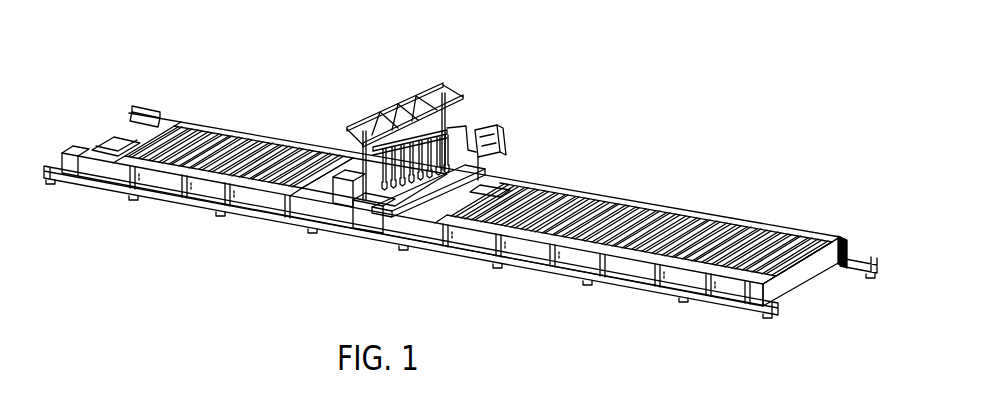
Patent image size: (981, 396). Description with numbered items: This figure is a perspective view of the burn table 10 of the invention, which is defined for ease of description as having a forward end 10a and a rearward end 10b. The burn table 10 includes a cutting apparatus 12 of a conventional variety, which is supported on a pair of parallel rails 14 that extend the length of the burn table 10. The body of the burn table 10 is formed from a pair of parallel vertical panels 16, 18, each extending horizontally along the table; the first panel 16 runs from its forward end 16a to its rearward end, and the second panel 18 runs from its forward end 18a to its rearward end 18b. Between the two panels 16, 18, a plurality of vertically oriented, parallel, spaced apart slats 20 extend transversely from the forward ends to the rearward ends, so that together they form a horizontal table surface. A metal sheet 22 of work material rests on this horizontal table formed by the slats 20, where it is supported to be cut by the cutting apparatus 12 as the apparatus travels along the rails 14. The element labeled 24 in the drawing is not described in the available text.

The burn table 10 is at (600, 147).
The forward end 10a is at (832, 227).
The rearward end 10b is at (177, 99).
The cutting apparatus 12 is at (530, 108).
The parallel rails 14 is at (862, 256).
The panel 16 is at (58, 163).
The forward end 16a is at (773, 293).
The panel 18 is at (487, 185).
The forward end 18a is at (847, 250).
The rearward end 18b is at (128, 117).
The slats 20 is at (635, 218).
The metal sheet 22 is at (323, 143).
The latch 24 is at (113, 124).